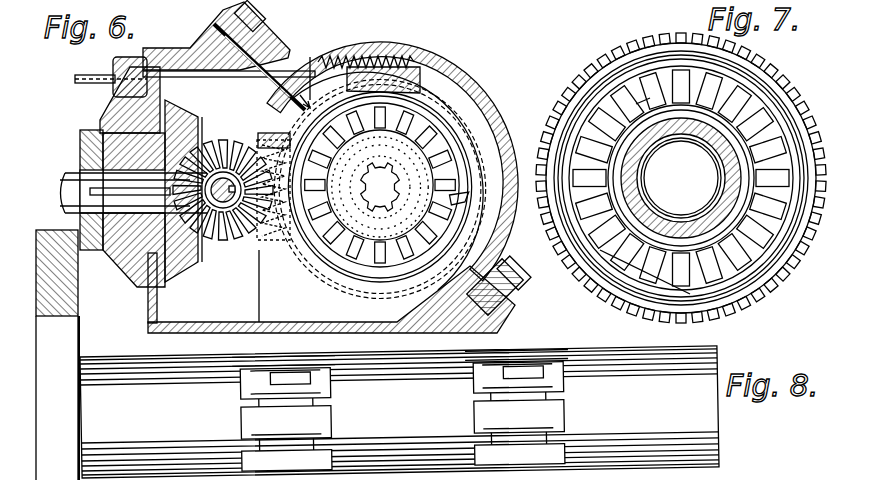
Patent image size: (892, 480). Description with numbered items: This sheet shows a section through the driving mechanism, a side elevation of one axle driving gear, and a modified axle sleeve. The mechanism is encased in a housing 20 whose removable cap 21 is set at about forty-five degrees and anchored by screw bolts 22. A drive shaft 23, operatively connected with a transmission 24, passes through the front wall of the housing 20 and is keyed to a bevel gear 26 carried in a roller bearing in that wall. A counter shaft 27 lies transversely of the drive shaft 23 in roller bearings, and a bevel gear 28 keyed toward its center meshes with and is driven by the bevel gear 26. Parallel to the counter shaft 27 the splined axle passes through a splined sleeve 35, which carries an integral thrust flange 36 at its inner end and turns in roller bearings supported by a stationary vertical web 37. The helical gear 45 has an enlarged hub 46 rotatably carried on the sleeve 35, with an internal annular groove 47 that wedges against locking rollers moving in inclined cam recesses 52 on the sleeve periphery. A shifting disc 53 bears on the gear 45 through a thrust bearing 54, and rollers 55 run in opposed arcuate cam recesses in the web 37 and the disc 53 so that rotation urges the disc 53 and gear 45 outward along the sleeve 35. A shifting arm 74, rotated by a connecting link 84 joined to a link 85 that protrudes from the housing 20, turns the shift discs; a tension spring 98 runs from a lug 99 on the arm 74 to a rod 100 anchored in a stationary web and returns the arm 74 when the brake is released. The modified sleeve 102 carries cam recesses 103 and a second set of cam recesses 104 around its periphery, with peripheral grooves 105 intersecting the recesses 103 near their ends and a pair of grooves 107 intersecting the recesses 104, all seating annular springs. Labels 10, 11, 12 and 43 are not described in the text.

In FIG. 6, the slotted carrier ring 10 is at (414, 142).
In FIG. 6, the section line 11 is at (520, 0).
In FIG. 6, the section line 12 is at (595, 0).
In FIG. 6, the housing 20 is at (141, 315).
In FIG. 6, the removable cap 21 is at (175, 2).
In FIG. 6, the screw bolts 22 is at (264, 22).
In FIG. 6, the drive shaft 23 is at (62, 190).
In FIG. 6, the transmission 24 is at (380, 187).
In FIG. 6, the bevel gear 26 is at (188, 118).
In FIG. 6, the counter shaft 27 is at (222, 215).
In FIG. 6, the bevel gear 28 is at (251, 134).
In FIG. 6, the splined sleeve 35 is at (461, 205).
In FIG. 6, the thrust flange 36 is at (462, 150).
In FIG. 6, the vertical web 37 is at (266, 293).
In FIG. 6, the section line 43 is at (406, 10).
In FIG. 6, the helical gear 45 is at (452, 118).
In FIG. 7, the helical gear 45 is at (793, 92).
In FIG. 7, the enlarged hub 46 is at (730, 148).
In FIG. 7, the internal annular groove 47 is at (722, 170).
In FIG. 7, the cam recesses 52 is at (640, 100).
In FIG. 6, the shifting disc 53 is at (552, 2).
In FIG. 7, the thrust bearing 54 is at (624, 332).
In FIG. 6, the rollers 55 is at (487, 2).
In FIG. 7, the rollers 55 is at (650, 262).
In FIG. 6, the shifting arm 74 is at (418, 92).
In FIG. 6, the connecting link 84 is at (278, 78).
In FIG. 6, the link 85 is at (104, 77).
In FIG. 6, the tension spring 98 is at (376, 54).
In FIG. 6, the lug 99 is at (426, 66).
In FIG. 6, the rod 100 is at (312, 62).
In FIG. 8, the modified sleeve 102 is at (399, 412).
In FIG. 8, the recesses 103 is at (482, 418).
In FIG. 8, the cam recesses 104 is at (248, 420).
In FIG. 8, the peripheral grooves 105 is at (503, 402).
In FIG. 8, the grooves 107 is at (262, 402).